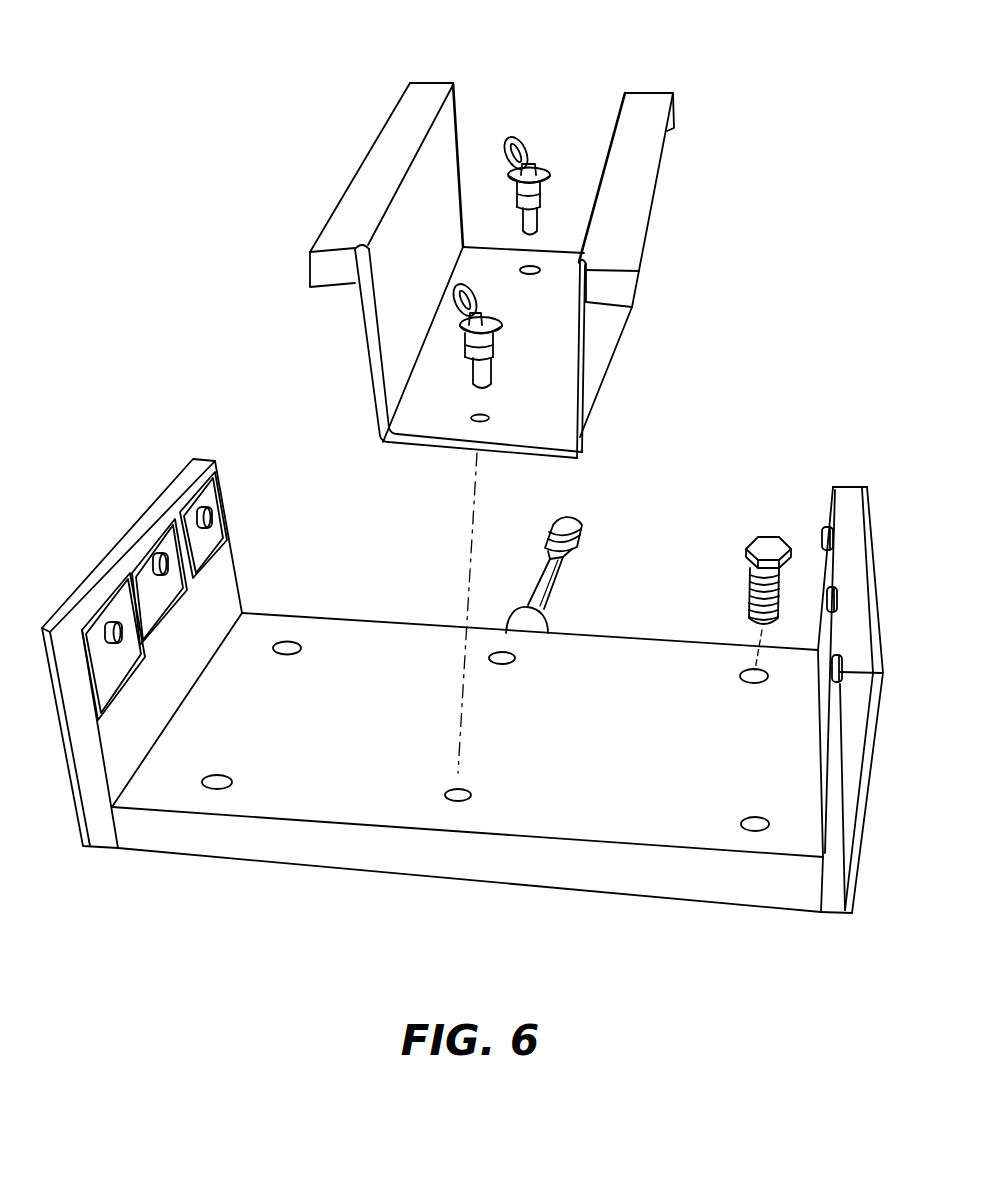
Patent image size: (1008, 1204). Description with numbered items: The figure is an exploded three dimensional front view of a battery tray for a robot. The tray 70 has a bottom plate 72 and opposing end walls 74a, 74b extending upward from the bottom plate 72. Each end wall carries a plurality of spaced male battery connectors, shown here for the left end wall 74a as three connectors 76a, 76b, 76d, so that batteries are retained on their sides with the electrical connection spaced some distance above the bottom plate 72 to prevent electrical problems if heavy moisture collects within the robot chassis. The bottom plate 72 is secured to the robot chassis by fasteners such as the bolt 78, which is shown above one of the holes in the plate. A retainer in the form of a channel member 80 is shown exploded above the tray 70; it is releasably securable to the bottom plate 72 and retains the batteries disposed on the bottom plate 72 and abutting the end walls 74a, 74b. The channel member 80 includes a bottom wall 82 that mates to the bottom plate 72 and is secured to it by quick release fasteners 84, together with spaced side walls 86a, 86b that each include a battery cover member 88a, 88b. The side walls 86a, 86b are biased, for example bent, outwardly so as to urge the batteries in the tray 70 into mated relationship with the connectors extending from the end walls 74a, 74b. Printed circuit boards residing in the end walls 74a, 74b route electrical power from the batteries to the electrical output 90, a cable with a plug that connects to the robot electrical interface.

The tray 70 is at (139, 497).
The bottom plate 72 is at (587, 810).
The end wall 74a is at (155, 728).
The end wall 74b is at (847, 492).
The male battery connector 76a is at (123, 633).
The male battery connector 76b is at (170, 567).
The male battery connector 76d is at (212, 519).
The bolt 78 is at (764, 532).
The channel member 80 is at (341, 171).
The bottom wall 82 is at (452, 431).
The quick release fastener 84 is at (483, 312).
The side wall 86a is at (434, 244).
The side wall 86b is at (597, 337).
The battery cover member 88a is at (430, 98).
The battery cover member 88b is at (641, 108).
The electrical output 90 is at (573, 528).